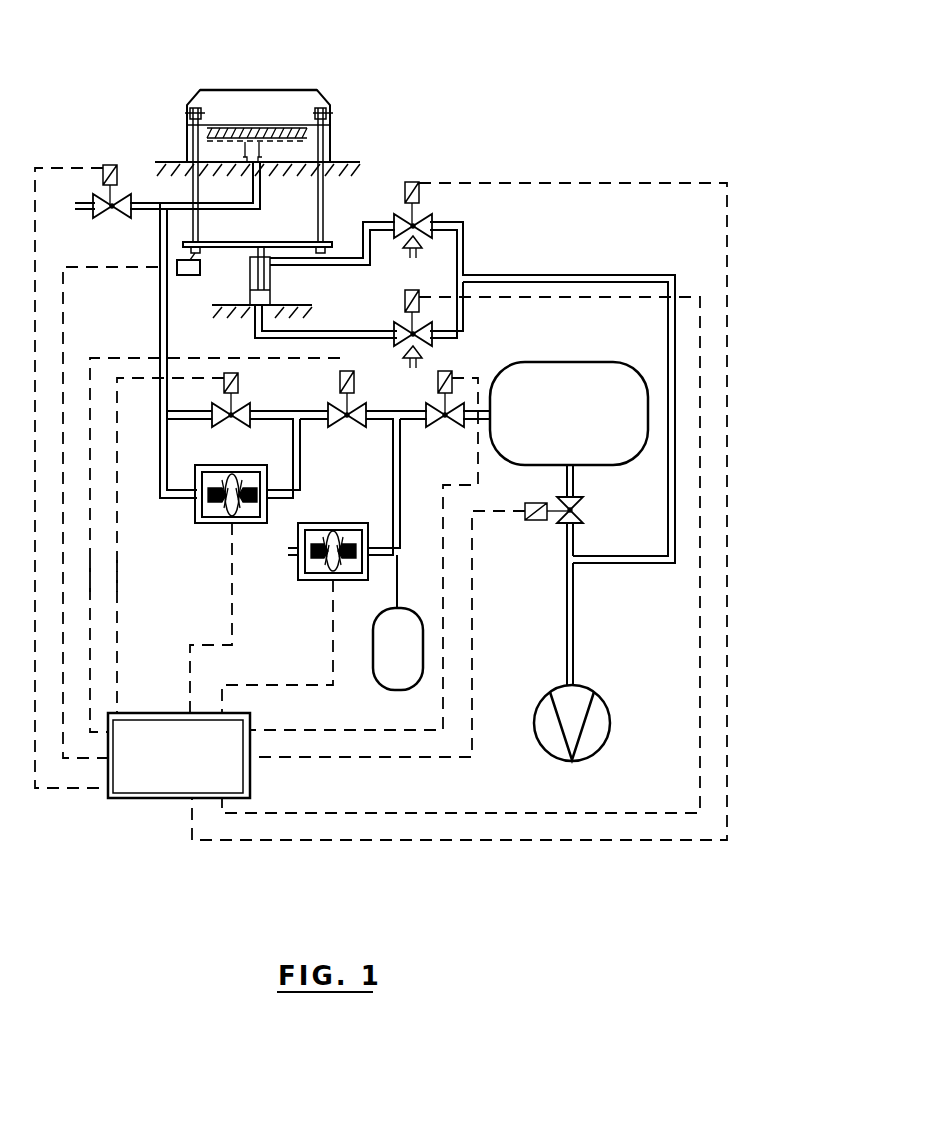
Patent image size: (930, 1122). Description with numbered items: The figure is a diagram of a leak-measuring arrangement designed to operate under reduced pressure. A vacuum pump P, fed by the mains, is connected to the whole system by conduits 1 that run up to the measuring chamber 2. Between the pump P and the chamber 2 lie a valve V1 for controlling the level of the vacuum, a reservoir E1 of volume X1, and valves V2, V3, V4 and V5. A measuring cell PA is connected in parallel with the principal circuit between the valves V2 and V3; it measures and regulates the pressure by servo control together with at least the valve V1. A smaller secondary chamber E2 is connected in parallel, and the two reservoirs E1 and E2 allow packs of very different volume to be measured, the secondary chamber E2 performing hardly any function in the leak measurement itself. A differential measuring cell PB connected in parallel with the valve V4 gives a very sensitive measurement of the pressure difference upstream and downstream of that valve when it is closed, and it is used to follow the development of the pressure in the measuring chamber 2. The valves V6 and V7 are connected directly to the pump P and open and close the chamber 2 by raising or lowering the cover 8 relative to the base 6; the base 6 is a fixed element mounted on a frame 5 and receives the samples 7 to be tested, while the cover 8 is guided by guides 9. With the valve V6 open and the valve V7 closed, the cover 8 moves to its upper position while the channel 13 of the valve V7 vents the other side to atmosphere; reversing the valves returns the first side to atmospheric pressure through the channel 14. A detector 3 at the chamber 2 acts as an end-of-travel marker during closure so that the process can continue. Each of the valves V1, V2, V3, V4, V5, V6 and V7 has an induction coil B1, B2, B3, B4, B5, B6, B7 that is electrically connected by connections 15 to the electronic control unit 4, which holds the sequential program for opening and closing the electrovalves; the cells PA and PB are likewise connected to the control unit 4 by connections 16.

The conduits 1 is at (158, 338).
The measuring chamber 2 is at (313, 92).
The detector 3 is at (189, 277).
The electronic control unit 4 is at (179, 755).
The frame 5 is at (335, 170).
The fixed element 6 is at (308, 152).
The samples 7 is at (254, 135).
The displaceable element 8 is at (215, 100).
The guides 9 is at (317, 195).
The channel 13 is at (411, 366).
The channel 14 is at (420, 252).
The connections 15 is at (90, 598).
The connections 16 is at (333, 654).
The induction coil B1 is at (525, 510).
The induction coil B2 is at (437, 372).
The induction coil B3 is at (343, 370).
The induction coil B4 is at (242, 377).
The induction coil B5 is at (103, 170).
The induction coil B6 is at (405, 186).
The induction coil B7 is at (408, 291).
The valve V1 is at (582, 503).
The valve V2 is at (445, 422).
The valve V3 is at (347, 422).
The valve V4 is at (231, 422).
The valve V5 is at (110, 217).
The valve V6 is at (402, 230).
The valve V7 is at (420, 332).
The reservoir E1 is at (560, 383).
The secondary chamber E2 is at (392, 682).
The measuring cell PA is at (330, 532).
The differential measuring cell PB is at (236, 480).
The vacuum pump P is at (600, 725).